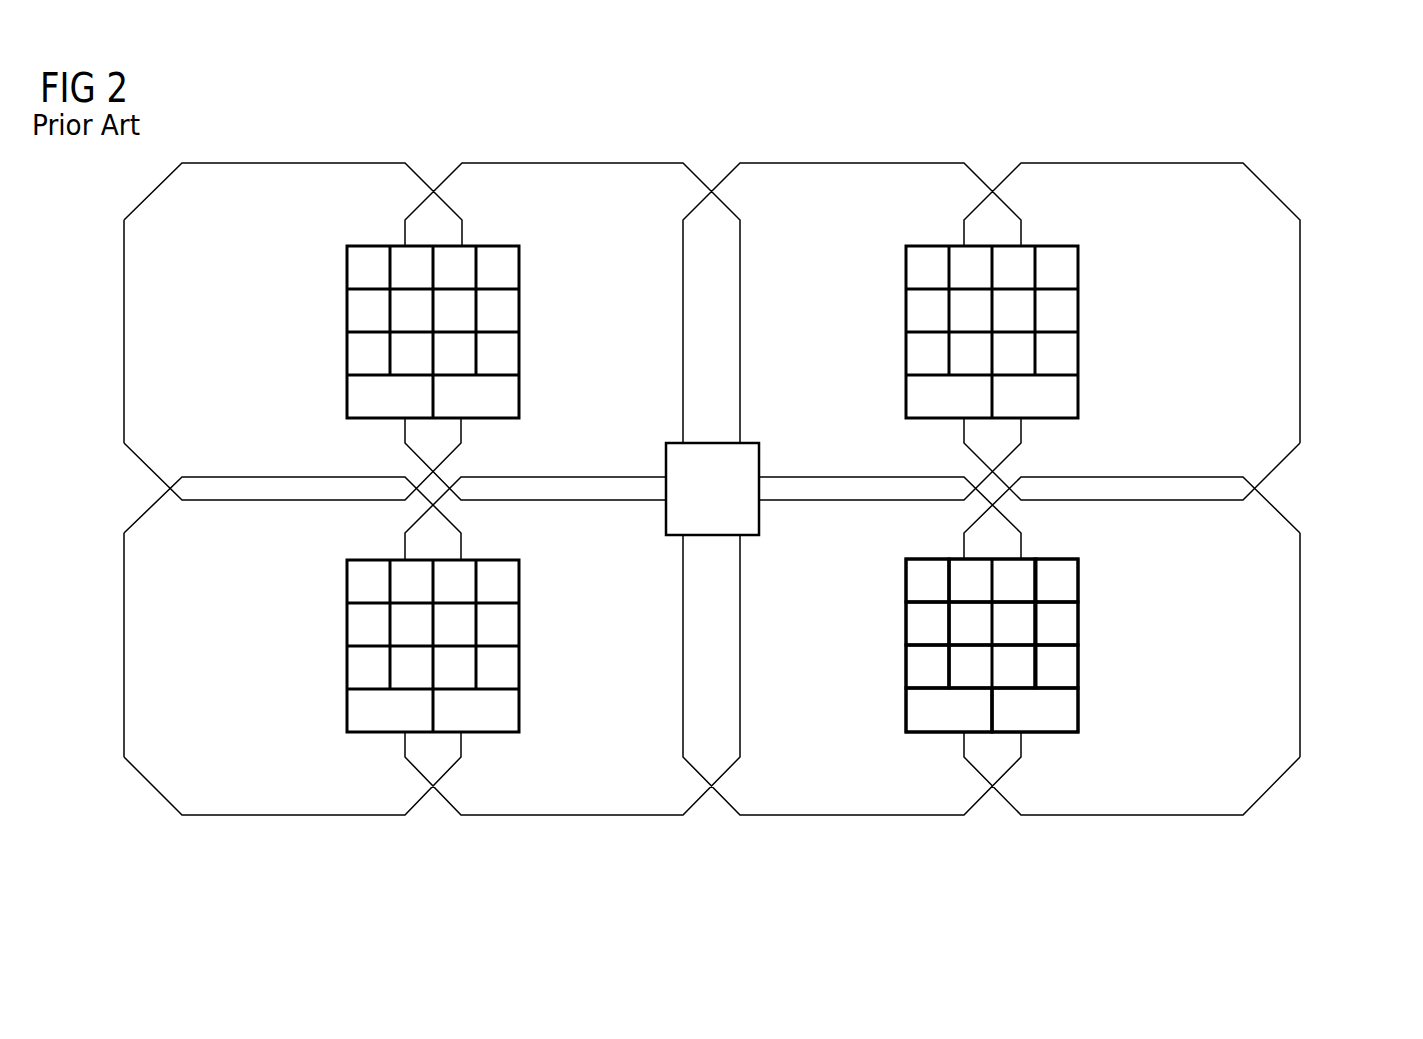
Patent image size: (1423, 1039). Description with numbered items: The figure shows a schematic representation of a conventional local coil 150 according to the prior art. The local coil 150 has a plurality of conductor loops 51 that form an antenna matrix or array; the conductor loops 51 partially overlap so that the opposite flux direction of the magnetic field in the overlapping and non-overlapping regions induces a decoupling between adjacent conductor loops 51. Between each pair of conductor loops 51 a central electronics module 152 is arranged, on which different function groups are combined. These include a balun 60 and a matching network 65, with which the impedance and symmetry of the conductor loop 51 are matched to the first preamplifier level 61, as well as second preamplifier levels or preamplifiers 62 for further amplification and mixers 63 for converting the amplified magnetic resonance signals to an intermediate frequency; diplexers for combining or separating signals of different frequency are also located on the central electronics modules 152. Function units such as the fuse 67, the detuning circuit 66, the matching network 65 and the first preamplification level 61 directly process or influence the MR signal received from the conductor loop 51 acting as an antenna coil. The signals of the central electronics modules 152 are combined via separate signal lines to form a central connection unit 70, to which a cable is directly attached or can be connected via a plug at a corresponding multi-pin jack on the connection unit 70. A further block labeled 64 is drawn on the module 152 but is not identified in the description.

The conventional local coil 150 is at (1329, 103).
The conductor loops 51 is at (385, 112).
The central connection unit 70 is at (696, 506).
The central electronics module 152 is at (530, 262).
The first preamplifier level 61 is at (958, 565).
The matching network 65 is at (915, 571).
The balun 60 is at (955, 610).
The detuning circuit 66 is at (915, 636).
The second preamplifier levels 62 is at (955, 663).
The fuse 67 is at (915, 678).
The mixers 63 is at (922, 722).
The right bottom row cell 64 is at (1060, 722).